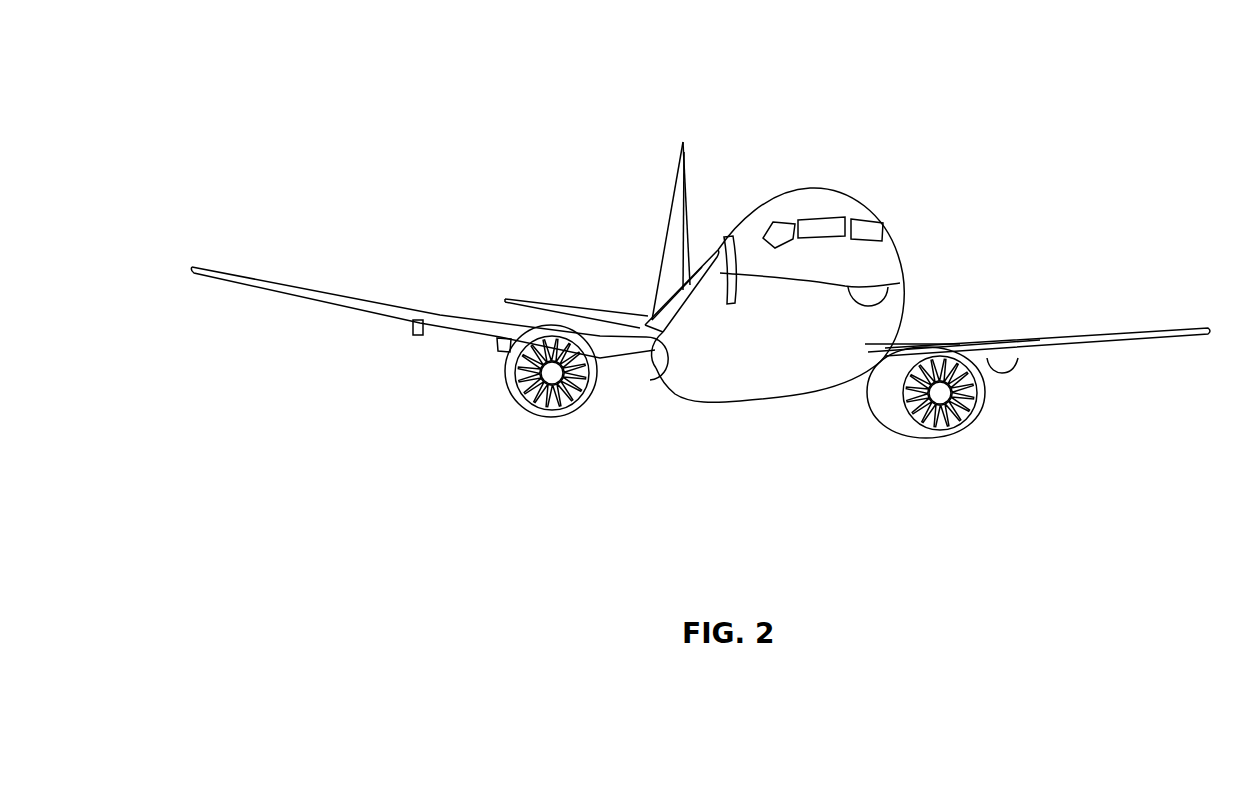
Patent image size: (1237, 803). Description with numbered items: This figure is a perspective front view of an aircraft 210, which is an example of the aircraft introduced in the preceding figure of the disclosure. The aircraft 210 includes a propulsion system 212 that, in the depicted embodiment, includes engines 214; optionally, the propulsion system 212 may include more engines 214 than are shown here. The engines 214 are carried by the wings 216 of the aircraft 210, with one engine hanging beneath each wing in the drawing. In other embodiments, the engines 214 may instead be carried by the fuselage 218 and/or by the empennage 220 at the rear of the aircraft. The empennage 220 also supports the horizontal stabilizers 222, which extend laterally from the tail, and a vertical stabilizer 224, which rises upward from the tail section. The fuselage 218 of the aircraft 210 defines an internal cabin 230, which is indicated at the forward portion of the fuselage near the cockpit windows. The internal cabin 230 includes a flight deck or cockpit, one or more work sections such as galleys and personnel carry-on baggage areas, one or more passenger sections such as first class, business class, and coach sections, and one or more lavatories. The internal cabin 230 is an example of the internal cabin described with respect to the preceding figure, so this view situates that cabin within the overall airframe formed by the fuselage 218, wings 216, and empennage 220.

The aircraft 210 is at (452, 92).
The propulsion system 212 is at (1020, 430).
The engines 214 is at (547, 418).
The wings 216 is at (333, 293).
The fuselage 218 is at (900, 253).
The empennage 220 is at (668, 286).
The horizontal stabilizers 222 is at (540, 300).
The vertical stabilizer 224 is at (677, 180).
The internal cabin 230 is at (872, 230).